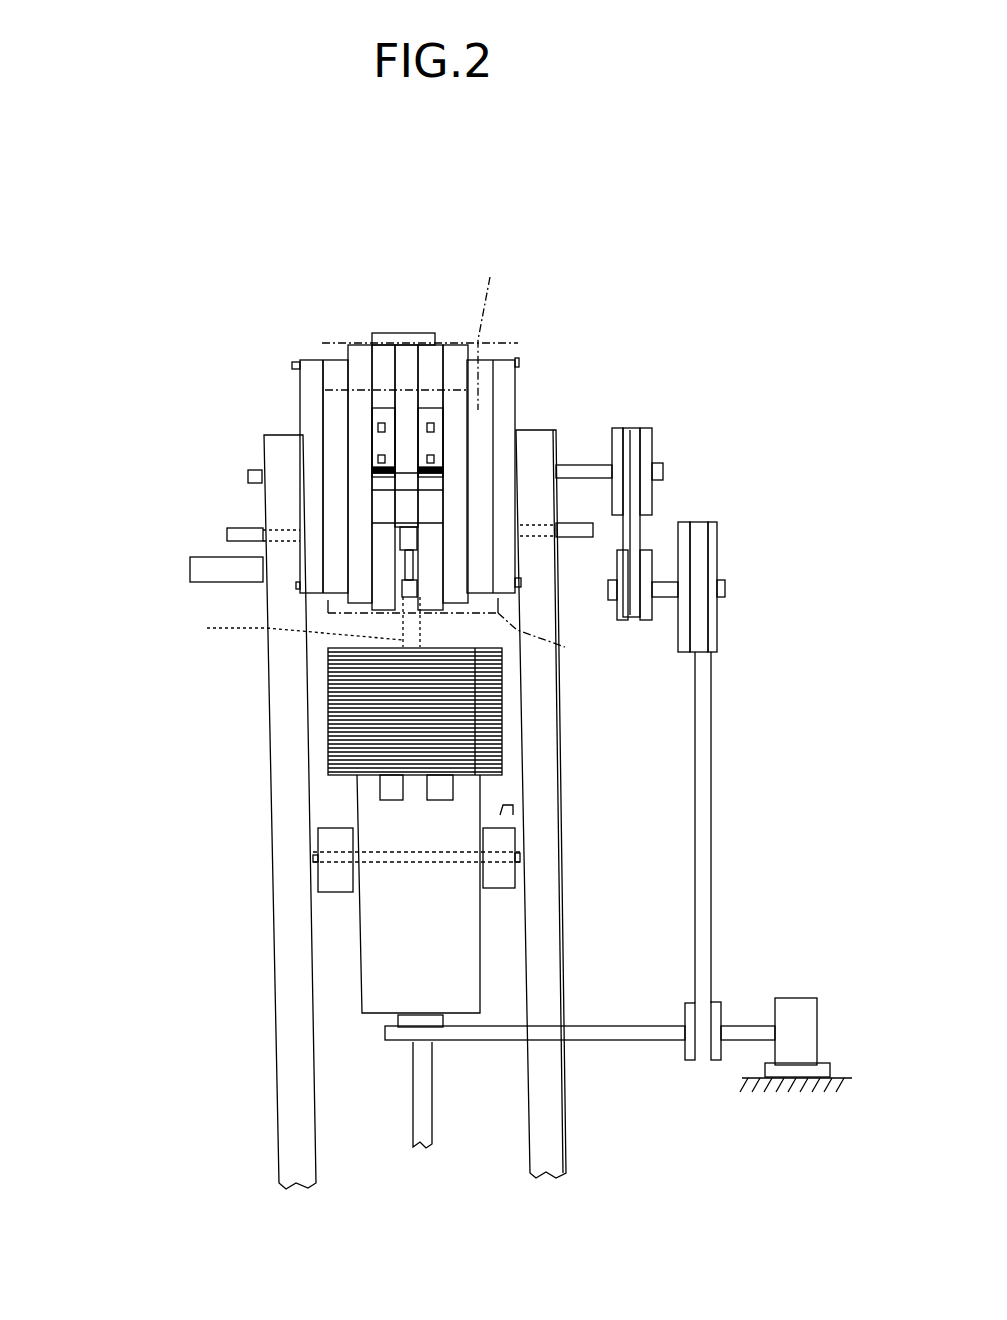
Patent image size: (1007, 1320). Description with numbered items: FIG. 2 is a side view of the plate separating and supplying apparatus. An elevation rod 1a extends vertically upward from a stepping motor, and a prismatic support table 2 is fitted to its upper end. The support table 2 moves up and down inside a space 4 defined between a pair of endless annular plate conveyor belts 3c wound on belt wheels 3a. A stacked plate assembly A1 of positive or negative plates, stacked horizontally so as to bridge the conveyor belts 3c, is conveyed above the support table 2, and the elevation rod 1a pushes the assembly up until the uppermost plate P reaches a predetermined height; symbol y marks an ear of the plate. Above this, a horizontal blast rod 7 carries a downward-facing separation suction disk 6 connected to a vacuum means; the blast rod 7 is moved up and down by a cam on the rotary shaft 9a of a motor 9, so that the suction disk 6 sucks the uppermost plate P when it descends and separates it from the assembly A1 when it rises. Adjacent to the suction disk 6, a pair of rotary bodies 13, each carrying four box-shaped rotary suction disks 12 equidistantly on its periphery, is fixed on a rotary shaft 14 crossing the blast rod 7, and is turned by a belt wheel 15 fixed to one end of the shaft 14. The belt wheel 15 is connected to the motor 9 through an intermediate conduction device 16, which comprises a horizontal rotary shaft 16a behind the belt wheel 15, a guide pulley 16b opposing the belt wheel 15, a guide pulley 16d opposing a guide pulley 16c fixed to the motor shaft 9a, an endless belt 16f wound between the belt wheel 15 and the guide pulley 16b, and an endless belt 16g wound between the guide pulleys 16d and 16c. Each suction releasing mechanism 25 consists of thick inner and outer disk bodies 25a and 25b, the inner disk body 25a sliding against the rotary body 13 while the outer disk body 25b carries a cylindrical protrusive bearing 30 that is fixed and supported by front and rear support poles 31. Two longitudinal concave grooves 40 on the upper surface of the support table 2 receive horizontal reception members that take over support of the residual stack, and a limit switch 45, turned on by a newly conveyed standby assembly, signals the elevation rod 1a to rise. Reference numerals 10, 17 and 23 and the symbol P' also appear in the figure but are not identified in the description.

The elevation rod 1a is at (418, 1143).
The support table 2 is at (370, 1013).
The belt wheels 3a is at (343, 883).
The plate conveyor belts 3c is at (320, 826).
The space 4 is at (430, 853).
The separation suction disk 6 is at (226, 628).
The blast rod 7 is at (415, 537).
The motor 9 is at (797, 1012).
The rotary shaft 9a is at (628, 1035).
The rod 10 is at (210, 562).
The box-shaped rotary suction disks 12 is at (378, 352).
The rotary body 13 is at (343, 360).
The rotary shaft 14 is at (250, 477).
The belt wheel 15 is at (647, 432).
The intermediate conduction device 16 is at (757, 592).
The rotary shaft 16a is at (668, 590).
The guide pulley 16b is at (618, 627).
The guide pulley 16c is at (715, 1060).
The guide pulley 16d is at (717, 638).
The endless annular belt 16f is at (637, 533).
The endless annular belt 16g is at (713, 850).
The guide 17 is at (348, 347).
The cap 23 is at (410, 333).
The suction releasing mechanism 25 is at (192, 252).
The inner disk body 25a is at (340, 360).
The outer disk body 25b is at (300, 380).
The protrusive bearing 30 is at (277, 445).
The support poles 31 is at (278, 1065).
The concave grooves 40 is at (430, 790).
The limit switch 45 is at (515, 808).
The stacked plate assembly for separation A1 is at (347, 702).
The plate P is at (290, 635).
The paper path P' is at (537, 460).
The ear of the plate y is at (498, 640).